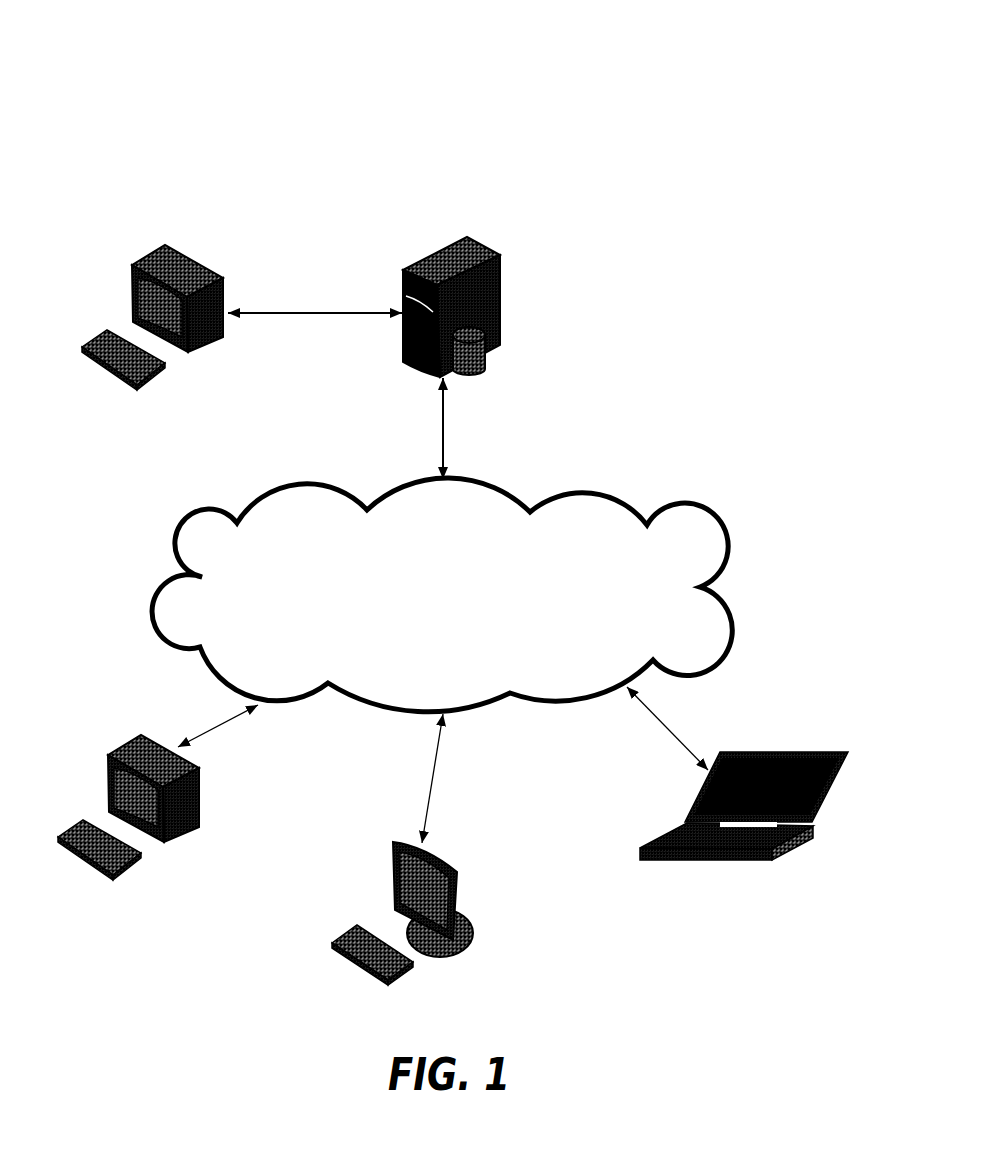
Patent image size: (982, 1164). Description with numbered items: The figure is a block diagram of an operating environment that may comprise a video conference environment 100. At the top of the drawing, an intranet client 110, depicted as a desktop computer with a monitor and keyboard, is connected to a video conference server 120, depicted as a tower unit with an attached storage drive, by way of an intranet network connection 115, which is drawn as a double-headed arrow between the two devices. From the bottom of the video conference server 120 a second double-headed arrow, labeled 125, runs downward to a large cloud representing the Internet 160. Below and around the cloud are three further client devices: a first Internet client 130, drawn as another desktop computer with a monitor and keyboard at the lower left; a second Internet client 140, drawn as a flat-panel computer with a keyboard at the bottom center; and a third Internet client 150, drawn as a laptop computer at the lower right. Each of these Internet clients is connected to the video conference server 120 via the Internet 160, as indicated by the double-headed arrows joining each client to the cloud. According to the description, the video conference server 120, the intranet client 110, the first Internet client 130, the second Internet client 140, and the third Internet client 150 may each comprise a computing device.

The video conference environment 100 is at (462, 31).
The intranet client 110 is at (197, 258).
The intranet network connection 115 is at (297, 312).
The video conference server 120 is at (460, 242).
The network connection 125 is at (443, 438).
The first Internet client 130 is at (202, 790).
The second Internet client 140 is at (465, 875).
The third Internet client 150 is at (757, 752).
The Internet 160 is at (627, 503).